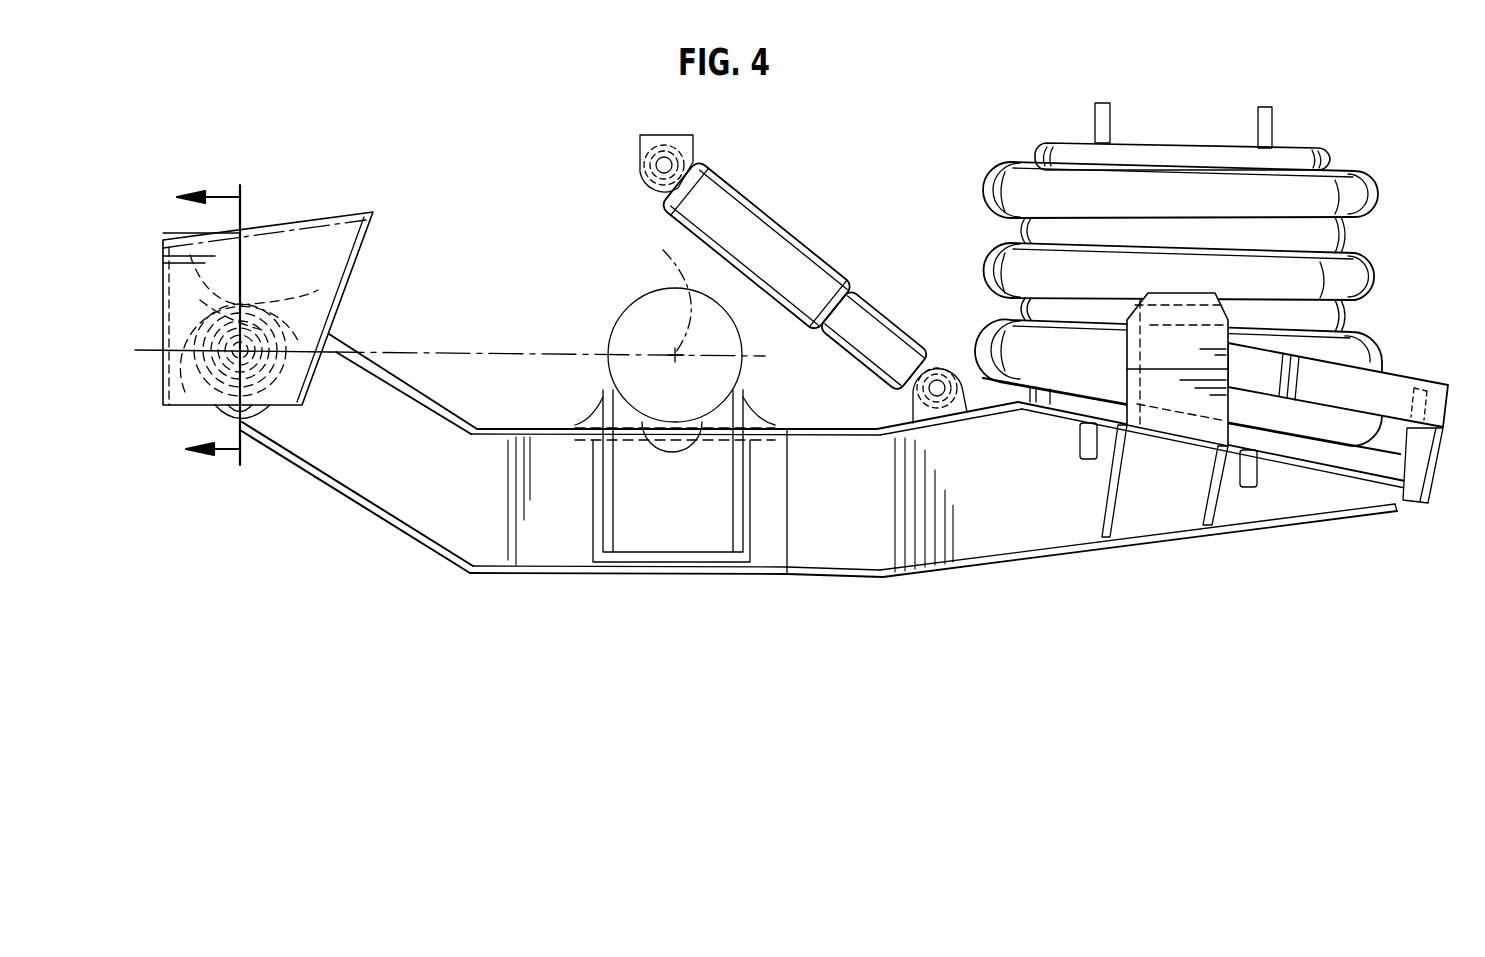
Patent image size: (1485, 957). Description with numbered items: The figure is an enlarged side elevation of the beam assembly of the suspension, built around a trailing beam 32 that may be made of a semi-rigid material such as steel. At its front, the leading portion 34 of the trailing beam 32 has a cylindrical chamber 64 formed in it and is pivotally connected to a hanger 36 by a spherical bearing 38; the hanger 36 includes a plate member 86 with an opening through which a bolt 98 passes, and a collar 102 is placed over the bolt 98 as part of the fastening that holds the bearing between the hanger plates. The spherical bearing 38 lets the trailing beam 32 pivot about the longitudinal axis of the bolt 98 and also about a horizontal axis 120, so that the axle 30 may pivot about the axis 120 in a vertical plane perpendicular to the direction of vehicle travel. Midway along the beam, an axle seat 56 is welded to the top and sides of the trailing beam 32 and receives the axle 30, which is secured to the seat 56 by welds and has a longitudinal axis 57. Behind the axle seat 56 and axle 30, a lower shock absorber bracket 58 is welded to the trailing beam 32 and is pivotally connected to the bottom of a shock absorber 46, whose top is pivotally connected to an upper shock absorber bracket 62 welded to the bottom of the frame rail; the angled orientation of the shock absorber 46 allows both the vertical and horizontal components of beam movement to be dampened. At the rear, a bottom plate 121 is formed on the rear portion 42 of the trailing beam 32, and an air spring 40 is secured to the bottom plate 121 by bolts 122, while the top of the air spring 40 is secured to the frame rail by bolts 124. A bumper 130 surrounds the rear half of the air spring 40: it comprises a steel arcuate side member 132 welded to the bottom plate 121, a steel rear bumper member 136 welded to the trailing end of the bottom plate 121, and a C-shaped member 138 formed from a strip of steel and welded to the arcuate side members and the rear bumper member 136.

The axle 30 is at (623, 318).
The trailing beam 32 is at (822, 500).
The leading portion 34 is at (397, 530).
The hanger 36 is at (311, 313).
The spherical bearing 38 is at (232, 404).
The air spring 40 is at (1160, 266).
The rear portion 42 is at (1068, 560).
The shock absorber 46 is at (745, 185).
The axle seat 56 is at (592, 515).
The longitudinal axis 57 is at (658, 298).
The lower shock absorber bracket 58 is at (950, 362).
The upper shock absorber bracket 62 is at (640, 152).
The cylindrical chamber 64 is at (182, 240).
The plate member 86 is at (300, 245).
The bolt 98 is at (212, 398).
The collar 102 is at (330, 290).
The horizontal axis 120 is at (460, 350).
The bottom plate 121 is at (1305, 470).
The bolts 122 is at (1255, 492).
The bolts 124 is at (1272, 122).
The bumper 130 is at (1349, 408).
The arcuate side member 132 is at (1125, 350).
The rear bumper member 136 is at (1425, 478).
The C-shaped member 138 is at (1360, 387).